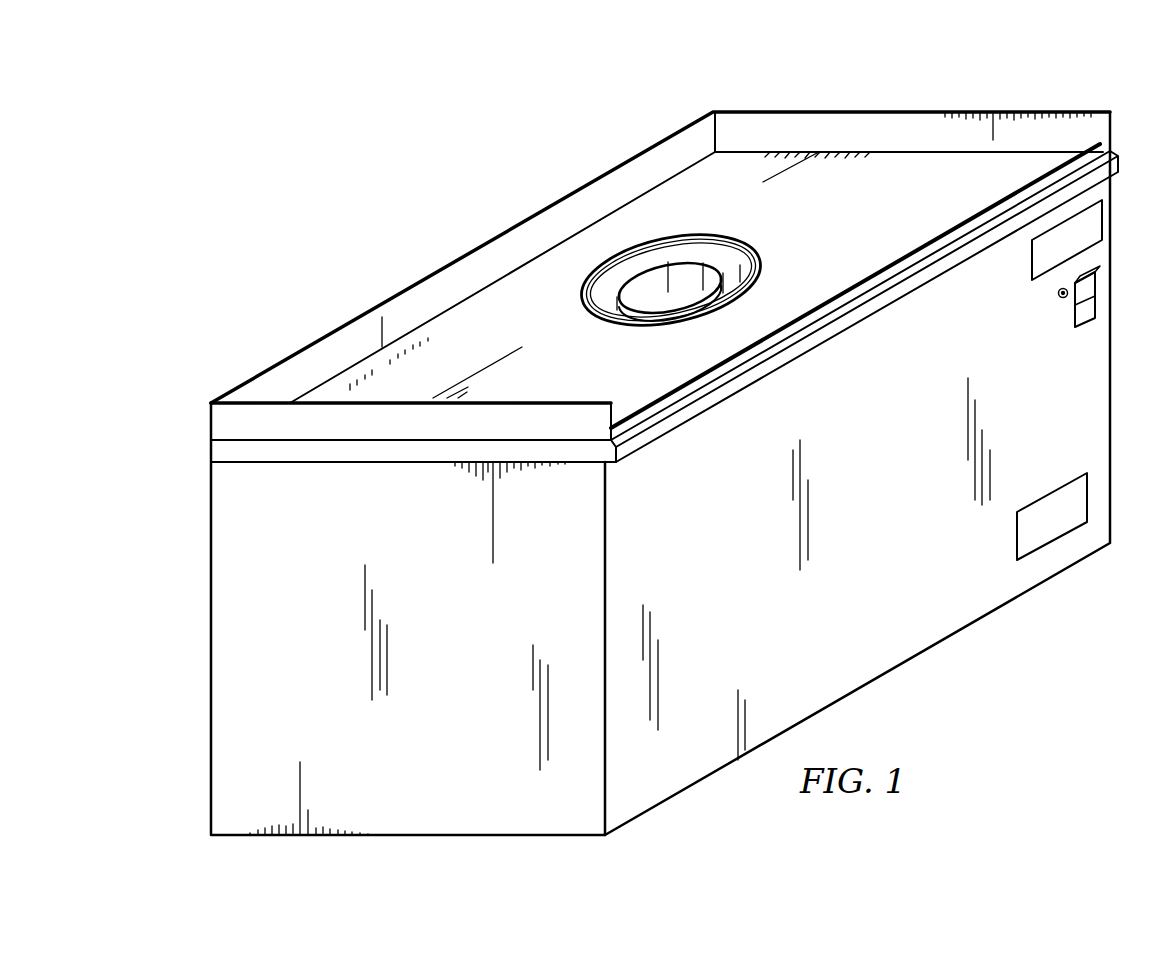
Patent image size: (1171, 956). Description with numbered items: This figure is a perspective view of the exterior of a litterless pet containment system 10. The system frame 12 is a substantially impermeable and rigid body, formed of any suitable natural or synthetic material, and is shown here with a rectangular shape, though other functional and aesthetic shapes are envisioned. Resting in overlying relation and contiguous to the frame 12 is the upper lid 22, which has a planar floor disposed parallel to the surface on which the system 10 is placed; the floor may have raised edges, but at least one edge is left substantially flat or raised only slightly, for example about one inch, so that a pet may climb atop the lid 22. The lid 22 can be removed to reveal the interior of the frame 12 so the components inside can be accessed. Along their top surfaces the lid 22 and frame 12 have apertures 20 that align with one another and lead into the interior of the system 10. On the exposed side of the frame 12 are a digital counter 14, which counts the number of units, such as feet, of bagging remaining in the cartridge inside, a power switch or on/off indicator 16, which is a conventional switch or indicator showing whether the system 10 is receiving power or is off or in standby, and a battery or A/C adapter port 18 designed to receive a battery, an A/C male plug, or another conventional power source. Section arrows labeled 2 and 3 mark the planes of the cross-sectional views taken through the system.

The section line 2- 2 is at (953, 103).
The section line 3- 3 is at (400, 288).
The litterless pet containment system 10 is at (688, 473).
The system frame 12 is at (721, 529).
The digital counter 14 is at (1103, 214).
The power switch or on/off indicator 16 is at (1065, 308).
The battery or A/C adapter port 18 is at (1017, 530).
The apertures 20 is at (680, 280).
The upper lid 22 is at (478, 247).